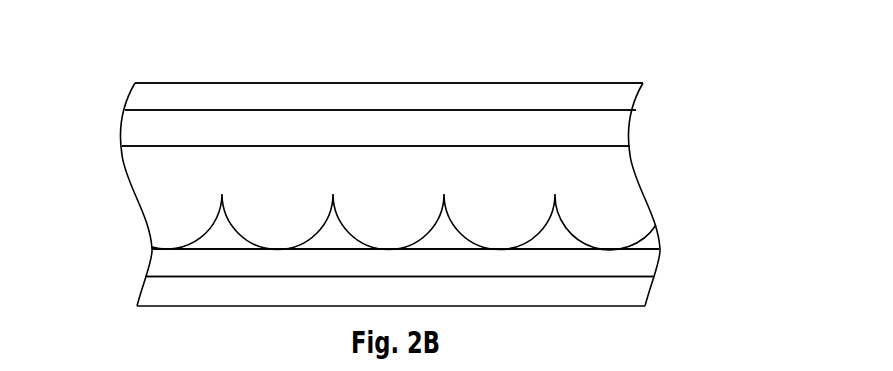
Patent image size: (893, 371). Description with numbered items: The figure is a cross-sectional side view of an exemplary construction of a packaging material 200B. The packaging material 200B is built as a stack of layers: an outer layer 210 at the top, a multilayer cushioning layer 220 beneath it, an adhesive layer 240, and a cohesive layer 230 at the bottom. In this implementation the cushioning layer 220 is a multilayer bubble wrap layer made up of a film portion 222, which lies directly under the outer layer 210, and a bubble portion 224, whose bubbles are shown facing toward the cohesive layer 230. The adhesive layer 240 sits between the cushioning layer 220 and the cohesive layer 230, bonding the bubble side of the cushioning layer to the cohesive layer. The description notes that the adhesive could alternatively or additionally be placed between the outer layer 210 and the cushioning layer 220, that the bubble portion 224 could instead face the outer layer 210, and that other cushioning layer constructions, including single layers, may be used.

The packaging material 200B is at (658, 53).
The outer layer 210 is at (625, 97).
The multilayer cushioning layer 220 is at (118, 107).
The film portion 222 is at (623, 122).
The bubble portion 224 is at (639, 209).
The adhesive layer 240 is at (645, 257).
The cohesive layer 230 is at (640, 292).